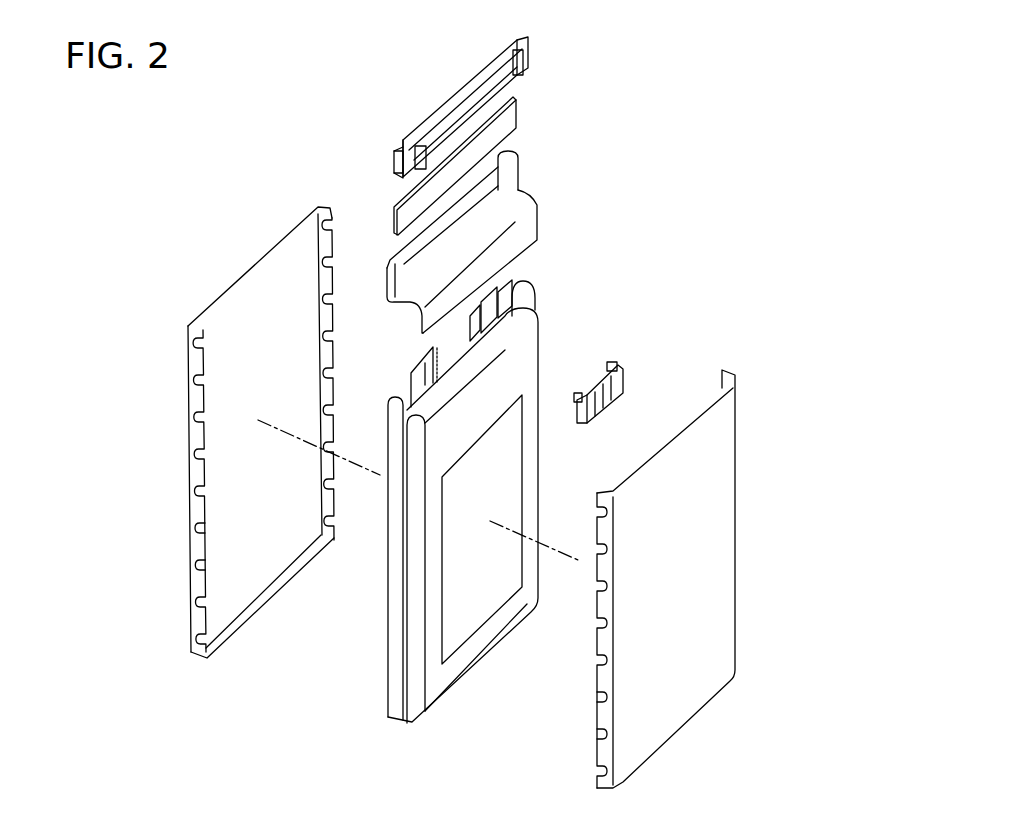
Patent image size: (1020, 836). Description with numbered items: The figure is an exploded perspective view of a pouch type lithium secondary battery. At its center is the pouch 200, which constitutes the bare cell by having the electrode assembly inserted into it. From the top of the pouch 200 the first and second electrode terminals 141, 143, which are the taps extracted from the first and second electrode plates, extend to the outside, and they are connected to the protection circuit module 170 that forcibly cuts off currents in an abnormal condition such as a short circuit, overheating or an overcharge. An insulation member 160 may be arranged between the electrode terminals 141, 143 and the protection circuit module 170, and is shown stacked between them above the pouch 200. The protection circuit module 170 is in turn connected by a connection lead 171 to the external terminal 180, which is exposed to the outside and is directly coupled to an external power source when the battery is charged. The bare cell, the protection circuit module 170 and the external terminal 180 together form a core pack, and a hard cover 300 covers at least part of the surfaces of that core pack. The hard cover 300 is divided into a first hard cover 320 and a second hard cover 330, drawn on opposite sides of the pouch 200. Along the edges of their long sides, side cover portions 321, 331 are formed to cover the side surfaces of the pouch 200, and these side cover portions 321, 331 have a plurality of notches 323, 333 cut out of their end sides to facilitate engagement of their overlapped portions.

The protection circuit module 170 is at (535, 52).
The connection lead 171 is at (512, 112).
The insulation member 160 is at (512, 170).
The first electrode terminal 141 is at (493, 307).
The second electrode terminal 143 is at (421, 370).
The pouch 200 is at (487, 467).
The external terminal 180 is at (623, 383).
The hard cover 300 is at (672, 579).
The first hard cover 320 is at (665, 579).
The side cover portion 321 is at (600, 737).
The notch 323 is at (600, 677).
The second hard cover 330 is at (218, 432).
The side cover portion 331 is at (197, 512).
The notch 333 is at (197, 568).